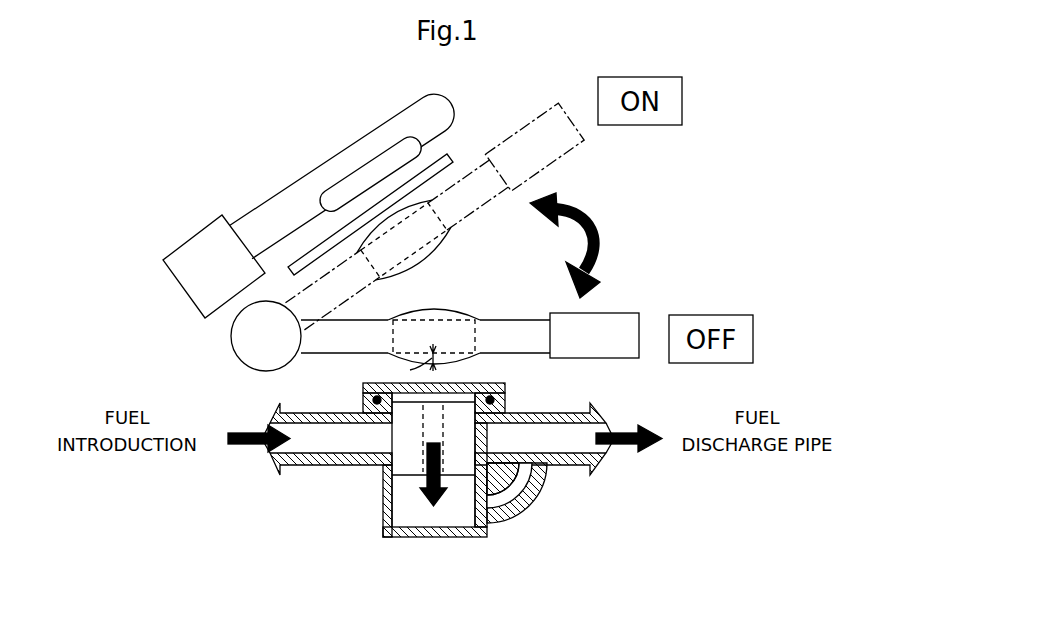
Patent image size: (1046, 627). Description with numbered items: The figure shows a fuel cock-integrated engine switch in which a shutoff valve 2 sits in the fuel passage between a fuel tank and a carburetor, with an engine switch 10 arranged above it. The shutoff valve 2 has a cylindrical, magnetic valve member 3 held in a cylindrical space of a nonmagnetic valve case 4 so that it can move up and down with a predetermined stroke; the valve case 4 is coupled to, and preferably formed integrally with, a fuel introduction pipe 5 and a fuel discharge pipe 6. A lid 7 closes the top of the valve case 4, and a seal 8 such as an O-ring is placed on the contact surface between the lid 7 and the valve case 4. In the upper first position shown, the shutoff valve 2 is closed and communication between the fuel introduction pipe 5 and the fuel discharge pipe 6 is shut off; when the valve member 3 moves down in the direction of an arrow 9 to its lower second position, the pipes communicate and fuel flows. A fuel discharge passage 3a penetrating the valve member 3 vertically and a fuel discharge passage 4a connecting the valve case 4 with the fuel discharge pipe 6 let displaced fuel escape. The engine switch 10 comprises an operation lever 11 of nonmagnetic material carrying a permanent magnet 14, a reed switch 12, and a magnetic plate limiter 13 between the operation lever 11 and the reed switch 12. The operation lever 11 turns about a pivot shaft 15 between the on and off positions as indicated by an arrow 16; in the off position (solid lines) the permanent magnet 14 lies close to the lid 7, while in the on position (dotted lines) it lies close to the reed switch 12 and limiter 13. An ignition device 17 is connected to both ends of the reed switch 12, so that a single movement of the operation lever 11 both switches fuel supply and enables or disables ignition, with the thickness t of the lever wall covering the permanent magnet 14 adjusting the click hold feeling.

The shutoff valve 2 is at (378, 497).
The valve member 3 is at (410, 455).
The fuel discharge passage 3a is at (434, 384).
The valve case 4 is at (392, 532).
The fuel discharge passage 4a is at (518, 495).
The fuel introduction pipe 5 is at (306, 446).
The fuel discharge pipe 6 is at (570, 440).
The lid 7 is at (375, 368).
The seal 8 is at (510, 402).
The arrow 9 is at (437, 508).
The engine switch 10 is at (730, 124).
The operation lever 11 is at (610, 323).
The reed switch 12 is at (383, 150).
The limiter 13 is at (442, 148).
The permanent magnet 14 is at (452, 330).
The pivot shaft 15 is at (250, 348).
The arrow 16 is at (592, 218).
The ignition device 17 is at (183, 243).